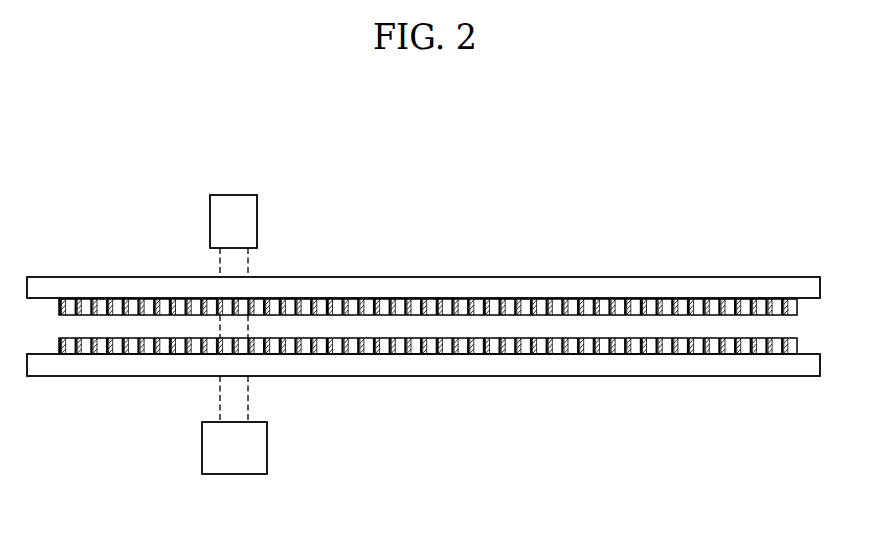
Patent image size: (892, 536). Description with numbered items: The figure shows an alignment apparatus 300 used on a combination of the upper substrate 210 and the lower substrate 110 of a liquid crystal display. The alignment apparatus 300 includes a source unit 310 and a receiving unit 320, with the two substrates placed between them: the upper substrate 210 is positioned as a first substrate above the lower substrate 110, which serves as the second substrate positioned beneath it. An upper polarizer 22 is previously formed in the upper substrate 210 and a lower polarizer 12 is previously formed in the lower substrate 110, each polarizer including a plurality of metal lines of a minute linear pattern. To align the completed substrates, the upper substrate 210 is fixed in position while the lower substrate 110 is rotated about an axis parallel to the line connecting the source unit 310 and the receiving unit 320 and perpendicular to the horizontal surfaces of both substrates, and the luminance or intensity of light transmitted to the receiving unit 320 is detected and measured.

The lower polarizer 12 is at (612, 354).
The upper polarizer 22 is at (523, 299).
The lower substrate 110 is at (533, 376).
The upper substrate 210 is at (422, 277).
The alignment apparatus 300 is at (500, 356).
The source unit 310 is at (257, 220).
The receiving unit 320 is at (267, 447).